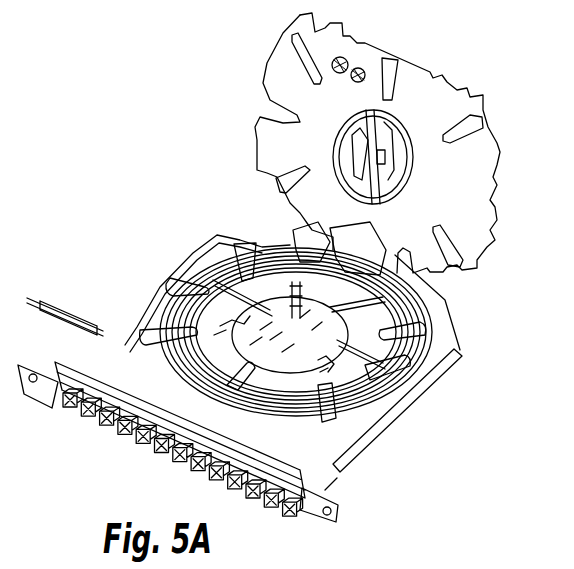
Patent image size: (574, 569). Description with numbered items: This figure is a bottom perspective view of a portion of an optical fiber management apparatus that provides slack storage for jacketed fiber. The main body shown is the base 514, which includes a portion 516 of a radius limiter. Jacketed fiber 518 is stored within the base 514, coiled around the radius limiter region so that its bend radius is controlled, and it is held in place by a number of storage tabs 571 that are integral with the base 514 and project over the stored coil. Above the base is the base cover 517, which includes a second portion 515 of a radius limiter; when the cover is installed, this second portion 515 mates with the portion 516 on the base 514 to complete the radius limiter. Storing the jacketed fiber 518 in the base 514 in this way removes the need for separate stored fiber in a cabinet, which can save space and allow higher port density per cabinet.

The base 514 is at (264, 357).
The second portion of a radius limiter 515 is at (415, 163).
The portion of a radius limiter 516 is at (290, 365).
The base cover 517 is at (497, 157).
The jacketed fiber 518 is at (167, 298).
The storage tabs 571 is at (248, 255).